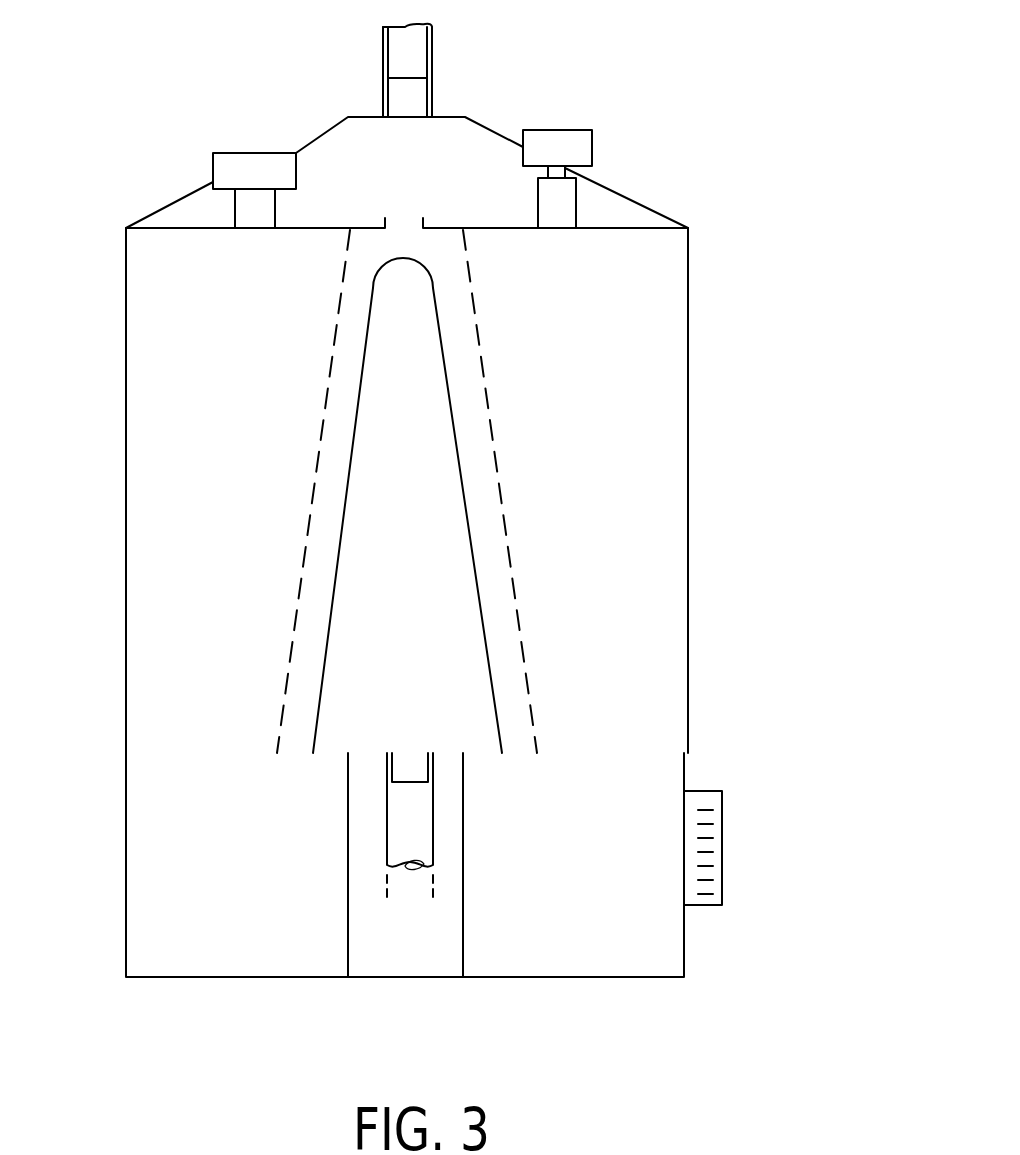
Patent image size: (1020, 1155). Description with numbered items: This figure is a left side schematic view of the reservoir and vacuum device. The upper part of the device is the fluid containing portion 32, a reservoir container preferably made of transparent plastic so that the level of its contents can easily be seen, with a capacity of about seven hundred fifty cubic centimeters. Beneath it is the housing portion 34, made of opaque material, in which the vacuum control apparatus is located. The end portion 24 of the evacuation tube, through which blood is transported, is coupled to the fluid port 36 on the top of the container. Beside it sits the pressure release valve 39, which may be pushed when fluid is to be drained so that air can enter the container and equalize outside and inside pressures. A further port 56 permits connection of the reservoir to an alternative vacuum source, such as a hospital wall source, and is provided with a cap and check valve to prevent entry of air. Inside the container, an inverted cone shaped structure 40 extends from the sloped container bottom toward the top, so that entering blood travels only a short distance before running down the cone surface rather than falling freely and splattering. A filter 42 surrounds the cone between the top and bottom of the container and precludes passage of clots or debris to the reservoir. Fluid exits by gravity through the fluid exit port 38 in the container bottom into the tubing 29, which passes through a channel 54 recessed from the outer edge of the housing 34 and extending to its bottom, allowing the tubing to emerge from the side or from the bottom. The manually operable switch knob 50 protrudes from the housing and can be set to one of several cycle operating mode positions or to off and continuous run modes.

The end portion of the evacuation tube 24 is at (432, 27).
The tubing 29 is at (387, 820).
The fluid containing portion 32 is at (627, 391).
The housing portion 34 is at (594, 884).
The fluid port 36 is at (383, 92).
The fluid exit port 38 is at (417, 758).
The pressure release valve 39 is at (592, 142).
The inverted cone shaped structure 40 is at (330, 623).
The filter 42 is at (308, 522).
The switch knob 50 is at (722, 836).
The channel 54 is at (424, 959).
The port 56 is at (213, 167).